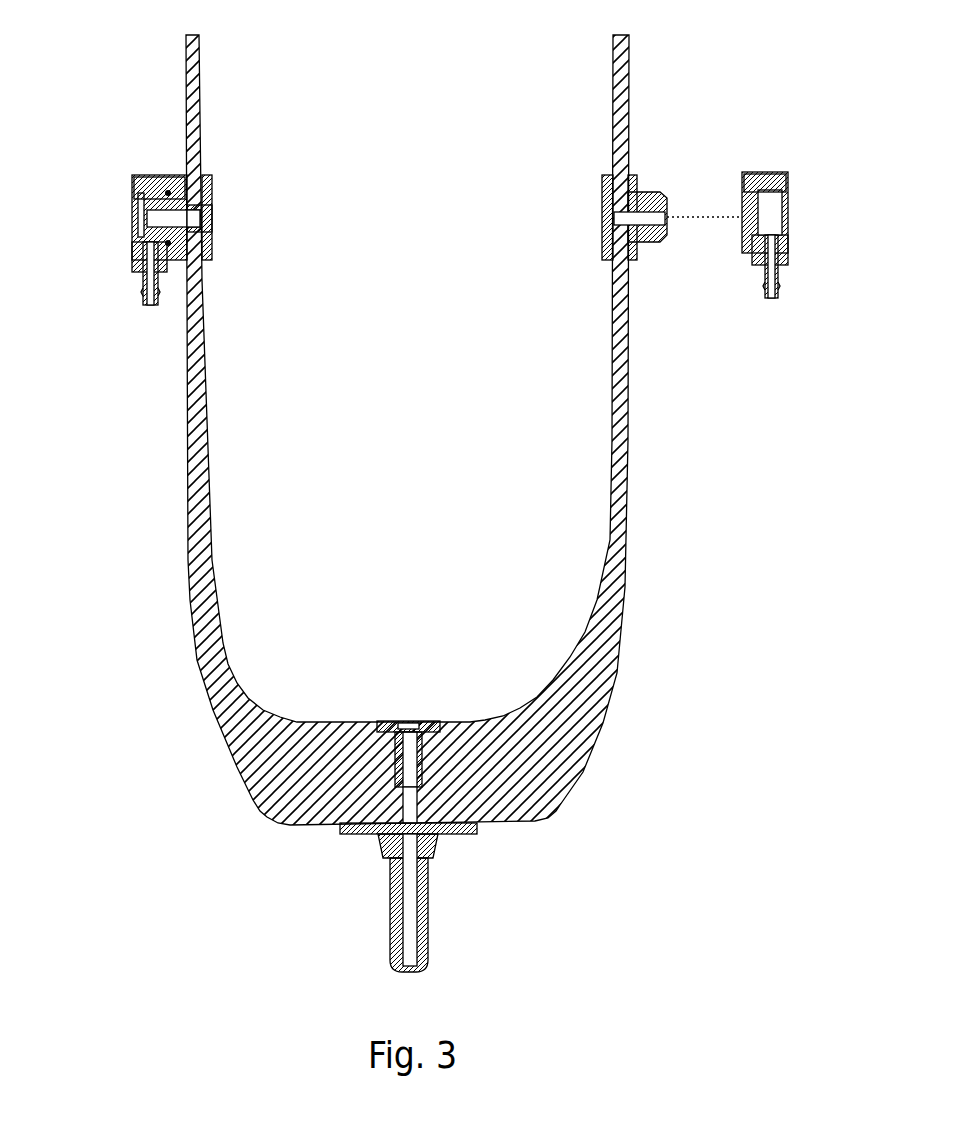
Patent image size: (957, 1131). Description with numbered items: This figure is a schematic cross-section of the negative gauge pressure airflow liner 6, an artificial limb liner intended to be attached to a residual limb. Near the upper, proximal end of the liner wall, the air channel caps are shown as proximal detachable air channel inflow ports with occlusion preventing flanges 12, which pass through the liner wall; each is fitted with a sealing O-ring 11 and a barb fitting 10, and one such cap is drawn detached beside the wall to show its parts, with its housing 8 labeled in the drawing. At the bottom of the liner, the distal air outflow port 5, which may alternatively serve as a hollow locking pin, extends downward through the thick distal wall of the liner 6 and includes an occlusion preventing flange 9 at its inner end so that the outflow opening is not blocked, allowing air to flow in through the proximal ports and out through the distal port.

The distal air outflow port 5 is at (428, 908).
The negative gauge pressure airflow liner 6 is at (628, 473).
The housing 8 is at (132, 218).
The occlusion preventing flange 9 is at (410, 723).
The barb fitting 10 is at (137, 265).
The sealing O-ring 11 is at (168, 193).
The proximal detachable air channel inflow port with occlusion preventing flange 12 is at (185, 197).